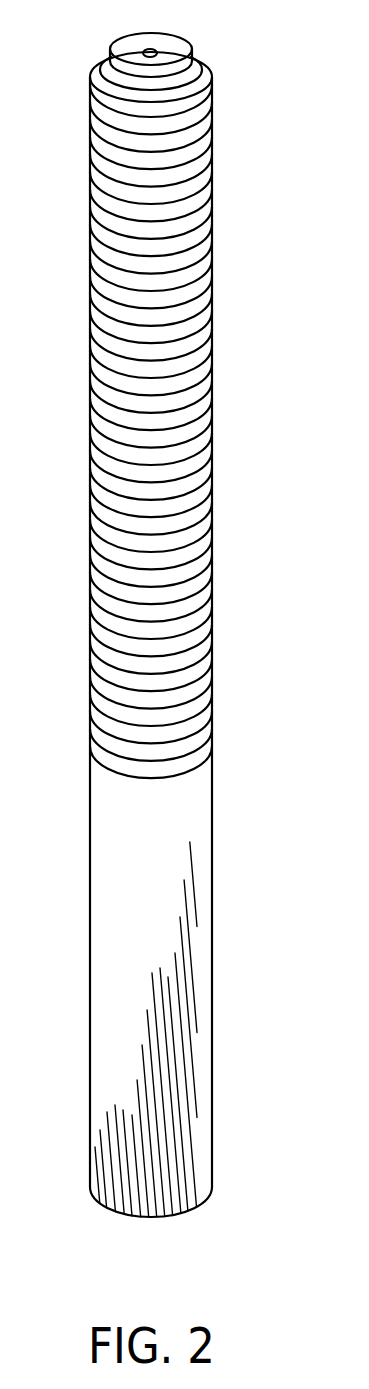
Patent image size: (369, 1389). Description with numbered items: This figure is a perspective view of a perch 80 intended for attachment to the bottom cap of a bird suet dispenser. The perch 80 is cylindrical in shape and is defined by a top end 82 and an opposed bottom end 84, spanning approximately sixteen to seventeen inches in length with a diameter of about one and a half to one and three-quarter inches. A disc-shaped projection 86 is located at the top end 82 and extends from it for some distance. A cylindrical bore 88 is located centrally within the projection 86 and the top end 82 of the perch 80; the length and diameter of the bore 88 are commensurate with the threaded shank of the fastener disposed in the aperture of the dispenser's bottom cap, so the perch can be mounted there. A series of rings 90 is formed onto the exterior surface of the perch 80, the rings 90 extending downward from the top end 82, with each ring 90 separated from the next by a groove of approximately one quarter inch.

The perch 80 is at (203, 917).
The top end 82 is at (212, 98).
The bottom end 84 is at (203, 1177).
The disc-shaped projection 86 is at (191, 52).
The cylindrical bore 88 is at (147, 51).
The rings 90 is at (208, 187).